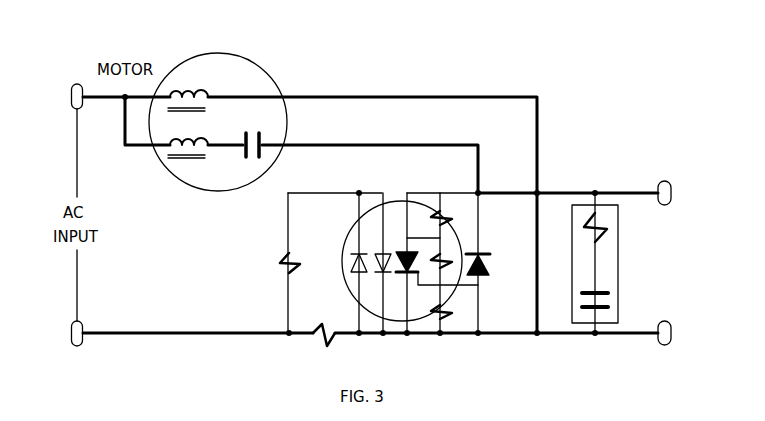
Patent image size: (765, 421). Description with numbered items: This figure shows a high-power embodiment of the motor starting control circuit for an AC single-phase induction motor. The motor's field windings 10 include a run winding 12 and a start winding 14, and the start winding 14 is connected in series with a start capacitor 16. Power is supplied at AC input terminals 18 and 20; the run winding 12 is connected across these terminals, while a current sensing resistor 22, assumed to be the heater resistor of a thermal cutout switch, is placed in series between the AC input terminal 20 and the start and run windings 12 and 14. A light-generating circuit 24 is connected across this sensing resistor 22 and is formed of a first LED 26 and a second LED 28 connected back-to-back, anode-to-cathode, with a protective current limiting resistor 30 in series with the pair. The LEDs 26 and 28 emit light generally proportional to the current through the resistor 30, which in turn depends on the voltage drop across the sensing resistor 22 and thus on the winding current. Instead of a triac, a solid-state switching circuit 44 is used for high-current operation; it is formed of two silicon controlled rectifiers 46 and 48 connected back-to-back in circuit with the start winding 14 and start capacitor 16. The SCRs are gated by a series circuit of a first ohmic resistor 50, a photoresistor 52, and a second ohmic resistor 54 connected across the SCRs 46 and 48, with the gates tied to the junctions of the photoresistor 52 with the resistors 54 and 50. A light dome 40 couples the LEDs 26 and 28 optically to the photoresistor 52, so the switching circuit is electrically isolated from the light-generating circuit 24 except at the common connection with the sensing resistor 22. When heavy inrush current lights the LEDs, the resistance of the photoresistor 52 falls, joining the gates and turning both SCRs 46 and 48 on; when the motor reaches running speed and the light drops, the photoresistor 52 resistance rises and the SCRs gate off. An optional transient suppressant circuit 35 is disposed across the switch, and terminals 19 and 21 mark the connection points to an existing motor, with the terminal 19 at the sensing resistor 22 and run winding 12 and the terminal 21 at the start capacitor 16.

The field windings 10 is at (247, 81).
The run winding 12 is at (209, 97).
The start winding 14 is at (209, 148).
The start capacitor 16 is at (259, 163).
The AC input terminal 18 is at (62, 96).
The AC input terminal 20 is at (62, 333).
The terminal 21 is at (677, 193).
The terminal 19 is at (677, 333).
The current sensing resistor 22 is at (332, 324).
The light-generating circuit 24 is at (318, 222).
The first LED 26 is at (350, 258).
The second LED 28 is at (380, 248).
The current limiting resistor 30 is at (280, 270).
The transient suppressant circuit 35 is at (611, 269).
The light dome 40 is at (346, 279).
The solid-state switching circuit 44 is at (442, 257).
The silicon controlled rectifier 46 is at (398, 250).
The silicon controlled rectifier 48 is at (483, 277).
The first ohmic resistor 50 is at (439, 210).
The photoresistor 52 is at (492, 260).
The second ohmic resistor 54 is at (466, 312).